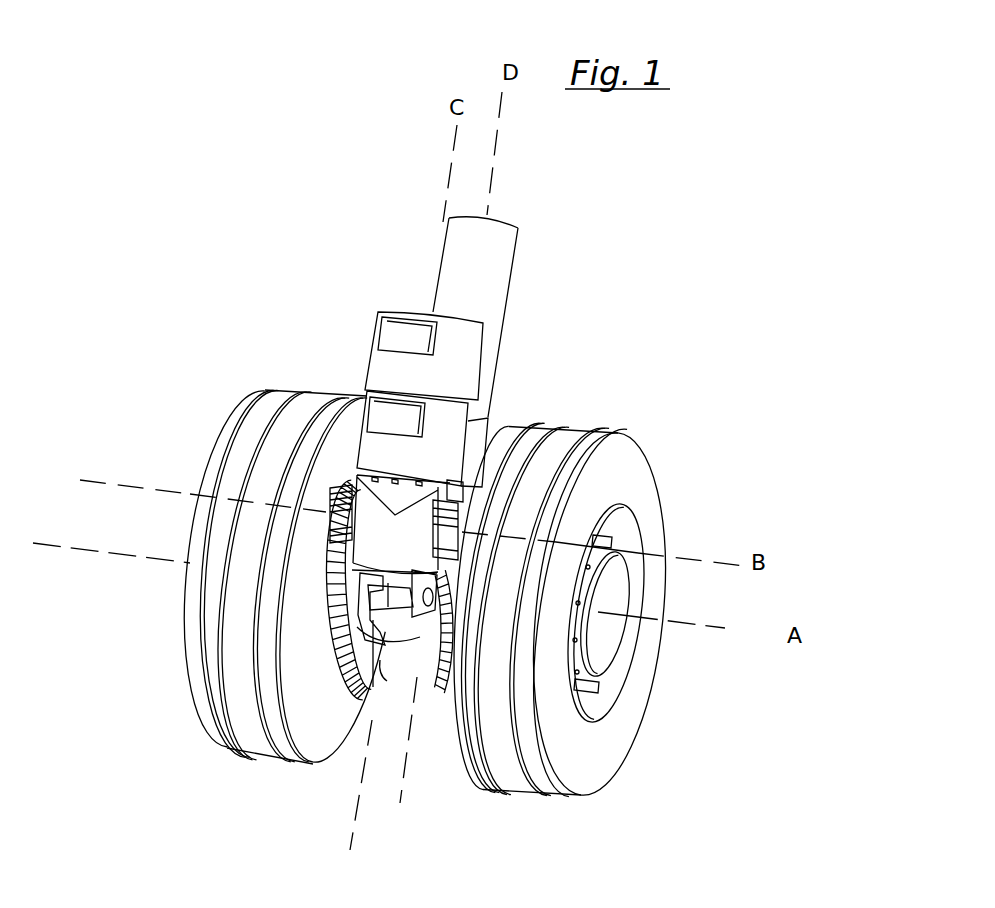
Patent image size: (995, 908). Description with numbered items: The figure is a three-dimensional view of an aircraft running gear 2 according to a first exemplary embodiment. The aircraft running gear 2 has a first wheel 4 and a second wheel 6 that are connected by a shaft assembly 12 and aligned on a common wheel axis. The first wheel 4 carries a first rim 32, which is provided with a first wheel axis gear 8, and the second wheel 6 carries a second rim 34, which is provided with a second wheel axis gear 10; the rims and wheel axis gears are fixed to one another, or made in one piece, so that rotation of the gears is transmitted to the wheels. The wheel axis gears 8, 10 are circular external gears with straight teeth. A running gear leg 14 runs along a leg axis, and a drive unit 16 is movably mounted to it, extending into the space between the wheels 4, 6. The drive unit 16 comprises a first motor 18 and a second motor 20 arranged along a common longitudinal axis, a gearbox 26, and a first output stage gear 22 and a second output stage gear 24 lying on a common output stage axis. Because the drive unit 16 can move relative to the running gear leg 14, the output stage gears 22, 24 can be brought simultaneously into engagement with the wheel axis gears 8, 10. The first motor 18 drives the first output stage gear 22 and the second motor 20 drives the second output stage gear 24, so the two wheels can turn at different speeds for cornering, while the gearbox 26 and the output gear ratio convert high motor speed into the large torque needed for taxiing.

The aircraft running gear 2 is at (607, 325).
The first wheel 4 is at (647, 464).
The second wheel 6 is at (193, 703).
The first wheel axis gear 8 is at (442, 682).
The second wheel axis gear 10 is at (387, 673).
The shaft assembly 12 is at (407, 631).
The running gear leg 14 is at (512, 268).
The drive unit 16 is at (356, 301).
The first motor 18 is at (363, 392).
The second motor 20 is at (370, 360).
The first output stage gear 22 is at (456, 546).
The second output stage gear 24 is at (348, 529).
The gearbox 26 is at (393, 546).
The first rim 32 is at (616, 593).
The second rim 34 is at (374, 662).